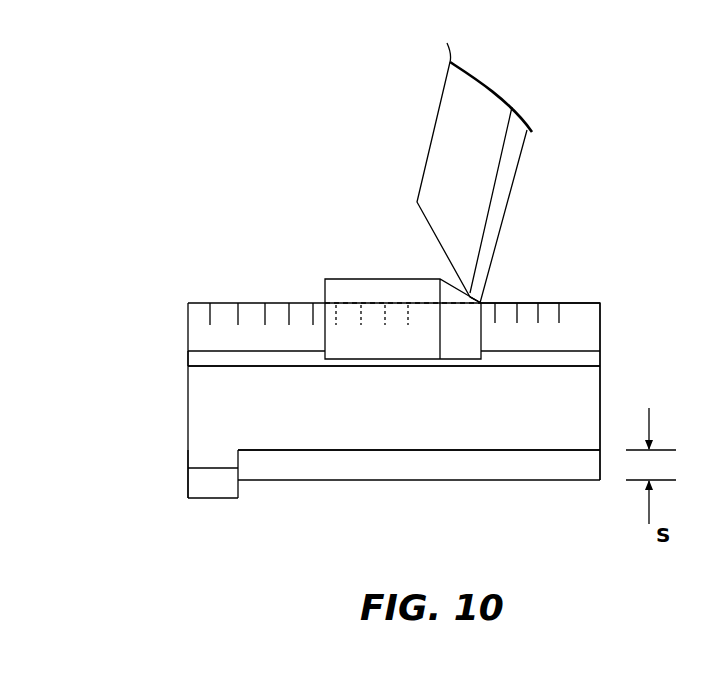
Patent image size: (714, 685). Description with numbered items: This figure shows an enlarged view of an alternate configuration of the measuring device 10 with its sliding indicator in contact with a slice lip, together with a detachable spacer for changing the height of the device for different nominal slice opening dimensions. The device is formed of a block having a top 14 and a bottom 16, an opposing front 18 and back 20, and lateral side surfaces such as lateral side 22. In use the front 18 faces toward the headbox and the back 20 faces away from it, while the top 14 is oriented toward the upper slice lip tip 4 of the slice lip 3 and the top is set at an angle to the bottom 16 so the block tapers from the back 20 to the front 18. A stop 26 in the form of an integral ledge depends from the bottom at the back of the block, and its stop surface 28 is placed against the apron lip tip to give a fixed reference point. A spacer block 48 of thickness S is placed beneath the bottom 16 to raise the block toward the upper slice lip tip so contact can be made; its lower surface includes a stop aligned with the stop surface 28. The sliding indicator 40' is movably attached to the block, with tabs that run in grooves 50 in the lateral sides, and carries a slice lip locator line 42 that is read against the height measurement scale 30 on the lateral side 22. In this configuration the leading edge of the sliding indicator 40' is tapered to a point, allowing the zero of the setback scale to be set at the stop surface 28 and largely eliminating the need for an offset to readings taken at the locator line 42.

The knife blade 3 is at (442, 147).
The upper slice lip tip 4 is at (483, 303).
The measuring device 10 is at (170, 307).
The top 14 is at (250, 303).
The bottom 16 is at (455, 452).
The front 18 is at (600, 375).
The back 20 is at (187, 383).
The lateral side surface 22 is at (555, 415).
The stop 26 is at (198, 458).
The stop surface 28 is at (240, 462).
The height measurement scale 30 is at (572, 308).
The sliding indicator 40' is at (373, 287).
The slice lip locator line 42 is at (481, 337).
The spacer block 48 is at (350, 468).
The groove 50 is at (217, 357).